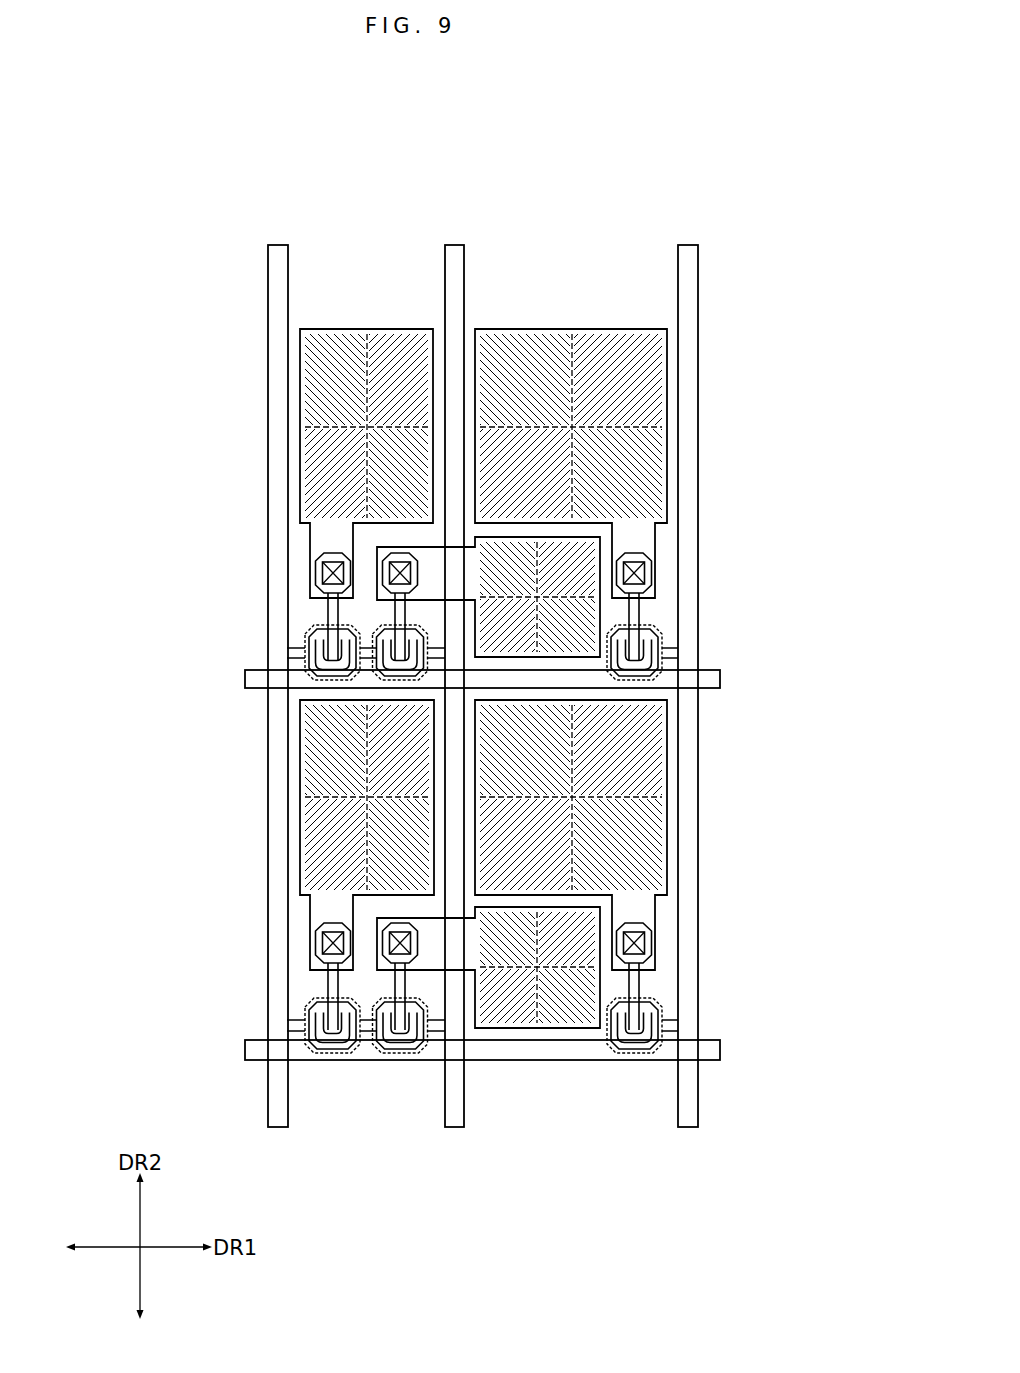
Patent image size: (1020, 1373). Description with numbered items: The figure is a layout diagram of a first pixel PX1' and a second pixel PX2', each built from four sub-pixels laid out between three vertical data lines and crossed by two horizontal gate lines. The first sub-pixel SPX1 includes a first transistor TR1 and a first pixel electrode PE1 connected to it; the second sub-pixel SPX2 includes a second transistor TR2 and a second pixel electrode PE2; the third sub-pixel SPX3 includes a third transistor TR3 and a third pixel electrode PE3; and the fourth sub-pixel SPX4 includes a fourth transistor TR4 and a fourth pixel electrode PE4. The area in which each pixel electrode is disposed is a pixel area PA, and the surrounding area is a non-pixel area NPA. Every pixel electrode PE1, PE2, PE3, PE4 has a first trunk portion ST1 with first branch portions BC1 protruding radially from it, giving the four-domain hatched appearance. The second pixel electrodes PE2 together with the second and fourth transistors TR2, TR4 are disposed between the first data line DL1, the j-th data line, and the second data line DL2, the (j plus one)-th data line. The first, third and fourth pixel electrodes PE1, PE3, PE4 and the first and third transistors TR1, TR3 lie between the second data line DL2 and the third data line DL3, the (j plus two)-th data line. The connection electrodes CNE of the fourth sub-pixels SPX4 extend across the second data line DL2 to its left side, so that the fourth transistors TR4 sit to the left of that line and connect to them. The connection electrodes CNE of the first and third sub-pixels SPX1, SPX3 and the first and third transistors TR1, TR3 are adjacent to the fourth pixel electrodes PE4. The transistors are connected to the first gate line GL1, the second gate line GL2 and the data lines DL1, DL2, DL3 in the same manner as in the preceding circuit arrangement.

The first data line DL1 is at (279, 245).
The second data line DL2 is at (456, 245).
The third data line DL3 is at (689, 245).
The first gate line GL1 is at (245, 679).
The second gate line GL2 is at (245, 1050).
The first pixel electrode PE1 is at (668, 426).
The second pixel electrode PE2 is at (300, 426).
The third pixel electrode PE3 is at (668, 796).
The fourth pixel electrode PE4 is at (598, 547).
The first sub-pixel SPX1 is at (637, 463).
The second sub-pixel SPX2 is at (301, 649).
The third sub-pixel SPX3 is at (637, 835).
The fourth sub-pixel SPX4 is at (537, 534).
The first pixel PX1' is at (444, 493).
The second pixel PX2' is at (444, 835).
The pixel area PA is at (444, 731).
The non-pixel area NPA is at (297, 367).
The first trunk portion ST1 is at (367, 374).
The first branch portions BC1 is at (402, 364).
The connection electrode CNE is at (390, 547).
The first transistor TR1 is at (664, 650).
The second transistor TR2 is at (290, 649).
The third transistor TR3 is at (632, 1055).
The fourth transistor TR4 is at (390, 626).